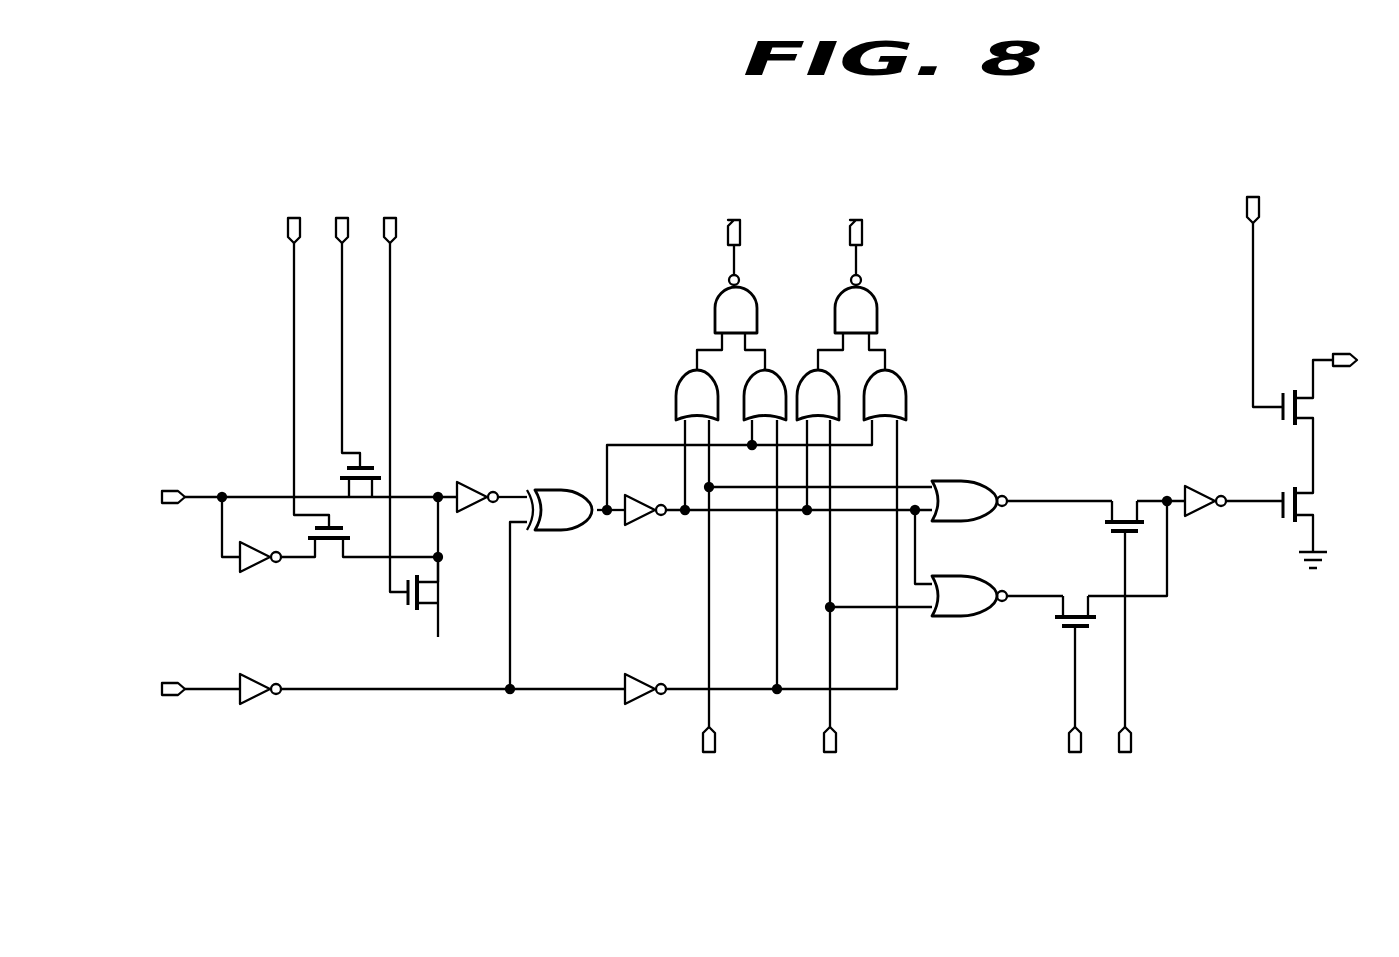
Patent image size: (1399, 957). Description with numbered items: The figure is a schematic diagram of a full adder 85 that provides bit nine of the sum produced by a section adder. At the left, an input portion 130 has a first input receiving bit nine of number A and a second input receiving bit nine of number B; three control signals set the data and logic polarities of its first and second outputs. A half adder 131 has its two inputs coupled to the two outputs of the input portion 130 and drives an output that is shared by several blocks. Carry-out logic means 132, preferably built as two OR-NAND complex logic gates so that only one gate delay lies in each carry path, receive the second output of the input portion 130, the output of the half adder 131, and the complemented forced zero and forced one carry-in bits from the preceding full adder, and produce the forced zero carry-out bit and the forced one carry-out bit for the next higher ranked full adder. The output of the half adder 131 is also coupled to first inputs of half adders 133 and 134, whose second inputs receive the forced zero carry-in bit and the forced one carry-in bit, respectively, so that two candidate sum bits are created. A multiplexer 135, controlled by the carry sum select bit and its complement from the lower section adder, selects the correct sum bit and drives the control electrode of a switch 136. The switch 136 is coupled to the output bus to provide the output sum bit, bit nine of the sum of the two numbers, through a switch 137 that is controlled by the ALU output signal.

The full adder 85 is at (306, 69).
The input portion 130 is at (245, 403).
The half adder 131 is at (553, 445).
The carry-out logic means 132 is at (673, 281).
The half adder 133 is at (972, 443).
The half adder 134 is at (984, 646).
The multiplexer 135 is at (1125, 448).
The switch 136 is at (1290, 530).
The switch 137 is at (1283, 430).